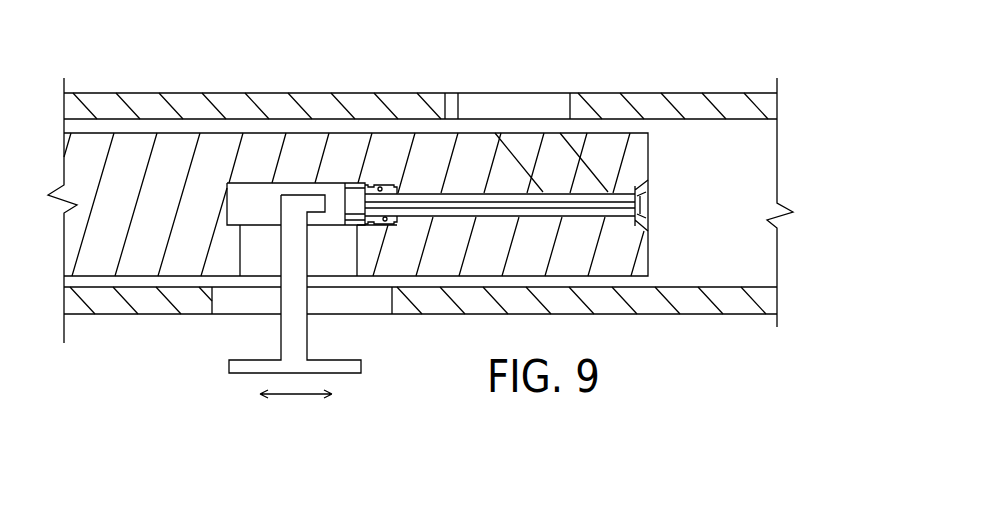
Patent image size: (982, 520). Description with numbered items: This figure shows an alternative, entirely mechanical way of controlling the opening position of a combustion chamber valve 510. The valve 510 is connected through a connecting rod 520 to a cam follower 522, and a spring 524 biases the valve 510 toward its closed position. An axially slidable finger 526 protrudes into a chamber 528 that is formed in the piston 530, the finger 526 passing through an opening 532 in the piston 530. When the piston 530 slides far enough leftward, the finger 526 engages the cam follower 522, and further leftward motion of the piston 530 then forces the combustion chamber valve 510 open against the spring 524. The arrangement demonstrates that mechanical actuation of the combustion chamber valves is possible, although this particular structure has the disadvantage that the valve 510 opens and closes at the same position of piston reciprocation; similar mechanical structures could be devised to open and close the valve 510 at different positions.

The combustion chamber valve 510 is at (642, 212).
The connecting rod 520 is at (448, 203).
The cam follower 522 is at (362, 217).
The spring 524 is at (380, 188).
The finger 526 is at (290, 343).
The chamber 528 is at (237, 198).
The piston 530 is at (102, 257).
The opening 532 is at (342, 258).